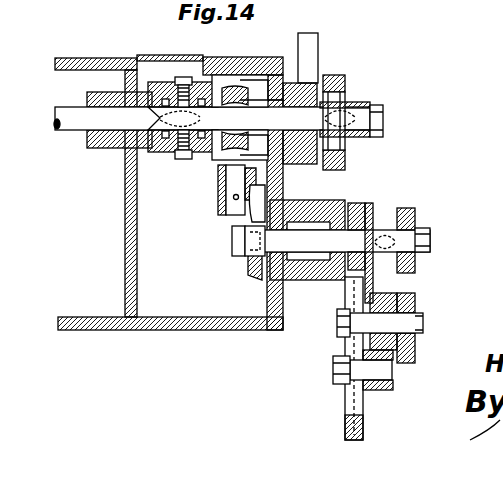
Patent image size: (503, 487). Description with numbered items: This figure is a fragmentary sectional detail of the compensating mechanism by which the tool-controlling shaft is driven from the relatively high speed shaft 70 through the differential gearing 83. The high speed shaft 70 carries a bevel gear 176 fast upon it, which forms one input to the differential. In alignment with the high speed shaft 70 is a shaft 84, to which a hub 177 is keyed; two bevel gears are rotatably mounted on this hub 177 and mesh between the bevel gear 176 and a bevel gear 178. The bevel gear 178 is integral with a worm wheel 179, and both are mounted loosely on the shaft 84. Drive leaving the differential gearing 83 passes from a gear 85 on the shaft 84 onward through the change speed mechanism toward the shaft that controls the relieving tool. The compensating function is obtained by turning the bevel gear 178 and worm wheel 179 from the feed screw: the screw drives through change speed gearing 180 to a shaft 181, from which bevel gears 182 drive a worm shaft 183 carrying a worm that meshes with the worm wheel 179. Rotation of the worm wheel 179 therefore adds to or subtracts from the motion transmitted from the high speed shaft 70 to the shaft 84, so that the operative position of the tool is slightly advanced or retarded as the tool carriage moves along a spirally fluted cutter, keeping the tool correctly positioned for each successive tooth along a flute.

The high speed shaft 70 is at (76, 126).
The differential gearing 83 is at (165, 82).
The shaft 84 is at (384, 121).
The gear 85 is at (346, 92).
The bevel gear 176 is at (127, 174).
The hub 177 is at (169, 156).
The bevel gear 178 is at (240, 82).
The worm wheel 179 is at (256, 90).
The change speed gearing 180 is at (395, 303).
The shaft 181 is at (320, 240).
The bevel gears 182 is at (248, 218).
The worm shaft 183 is at (216, 192).